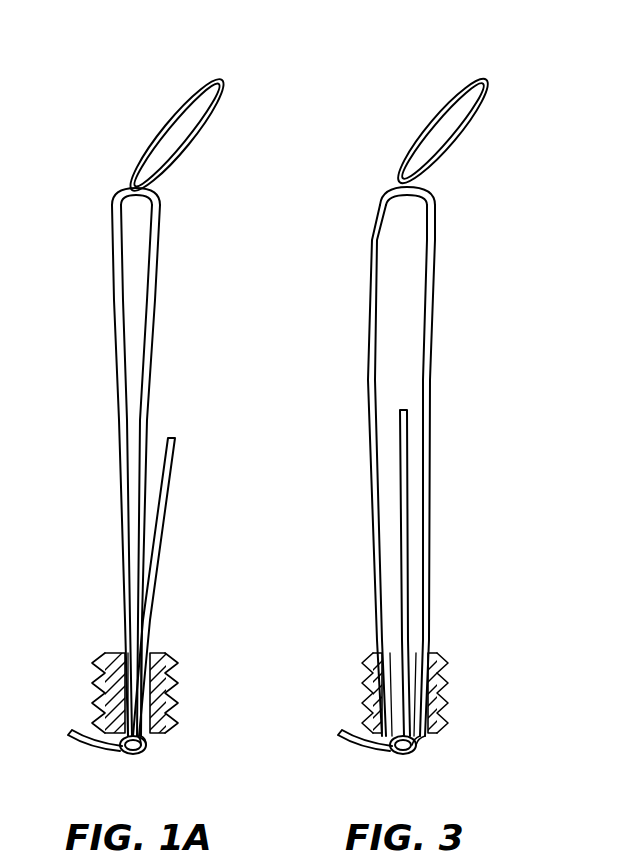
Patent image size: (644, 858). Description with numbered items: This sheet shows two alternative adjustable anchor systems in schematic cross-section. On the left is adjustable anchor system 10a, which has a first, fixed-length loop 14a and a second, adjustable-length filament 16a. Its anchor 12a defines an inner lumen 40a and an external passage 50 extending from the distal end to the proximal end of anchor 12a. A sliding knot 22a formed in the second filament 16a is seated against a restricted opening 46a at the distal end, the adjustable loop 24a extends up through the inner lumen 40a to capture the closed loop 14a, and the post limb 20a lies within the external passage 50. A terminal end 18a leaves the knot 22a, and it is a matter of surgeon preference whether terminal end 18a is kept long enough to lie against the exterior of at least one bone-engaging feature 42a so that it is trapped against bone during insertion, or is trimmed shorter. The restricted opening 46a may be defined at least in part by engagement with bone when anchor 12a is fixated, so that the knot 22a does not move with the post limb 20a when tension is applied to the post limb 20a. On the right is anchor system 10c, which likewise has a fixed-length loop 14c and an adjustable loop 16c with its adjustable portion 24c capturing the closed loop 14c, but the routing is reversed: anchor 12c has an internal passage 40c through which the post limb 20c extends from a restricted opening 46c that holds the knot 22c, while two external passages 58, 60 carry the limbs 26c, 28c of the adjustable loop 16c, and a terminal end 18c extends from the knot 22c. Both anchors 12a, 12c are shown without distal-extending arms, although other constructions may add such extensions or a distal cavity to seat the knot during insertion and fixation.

In FIG. 1A, the adjustable anchor system 10a is at (200, 33).
In FIG. 1A, the first fixed-length loop 14a is at (138, 118).
In FIG. 1A, the second adjustable-length filament 16a is at (150, 290).
In FIG. 1A, the adjustable loop 24a is at (148, 352).
In FIG. 1A, the post limb 20a is at (172, 495).
In FIG. 1A, the anchor 12a is at (90, 683).
In FIG. 1A, the bone-engaging feature 42a is at (105, 650).
In FIG. 1A, the external passage 50 is at (170, 652).
In FIG. 1A, the inner lumen 40a is at (143, 655).
In FIG. 1A, the sliding knot 22a is at (140, 752).
In FIG. 1A, the restricted opening 46a is at (156, 745).
In FIG. 1A, the terminal end 18a is at (75, 752).
In FIG. 3, the anchor system 10c is at (450, 33).
In FIG. 3, the first fixed-length loop 14c is at (478, 150).
In FIG. 3, the adjustable loop 16c is at (431, 282).
In FIG. 3, the adjustable loop 24c is at (431, 354).
In FIG. 3, the limb of adjustable loop 28c is at (367, 432).
In FIG. 3, the limb of adjustable loop 26c is at (430, 527).
In FIG. 3, the post limb 20c is at (408, 460).
In FIG. 3, the anchor 12c is at (460, 686).
In FIG. 3, the external passage 60 is at (357, 660).
In FIG. 3, the external passage 58 is at (445, 652).
In FIG. 3, the internal passage 40c is at (398, 650).
In FIG. 3, the knot 22c is at (412, 752).
In FIG. 3, the restricted opening 46c is at (425, 745).
In FIG. 3, the terminal end 18c is at (350, 745).